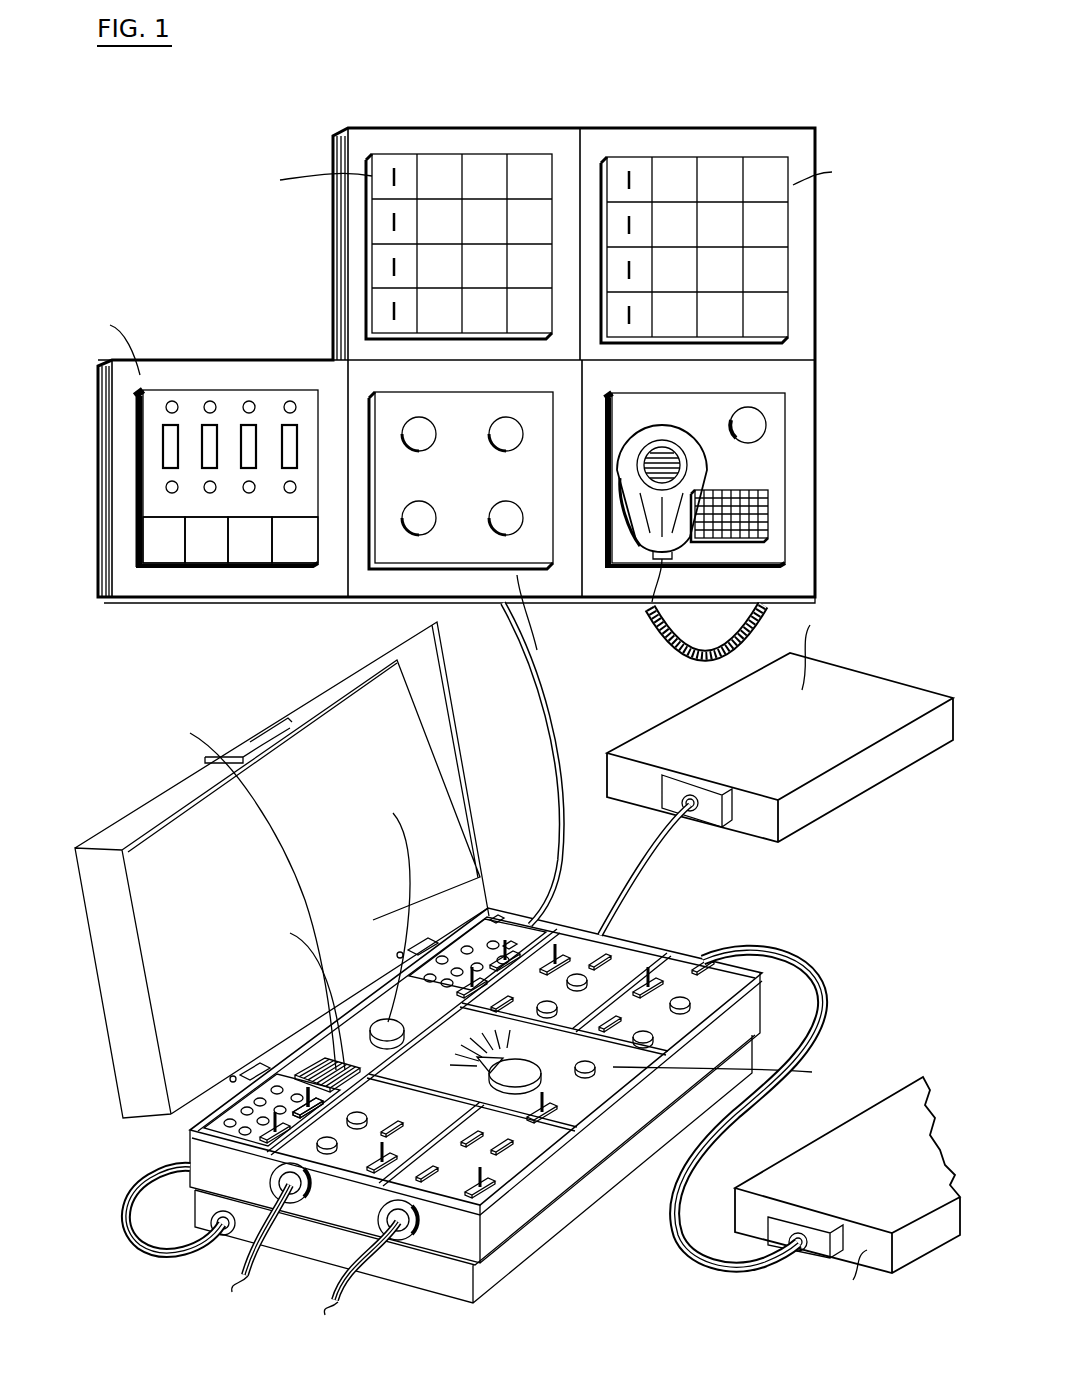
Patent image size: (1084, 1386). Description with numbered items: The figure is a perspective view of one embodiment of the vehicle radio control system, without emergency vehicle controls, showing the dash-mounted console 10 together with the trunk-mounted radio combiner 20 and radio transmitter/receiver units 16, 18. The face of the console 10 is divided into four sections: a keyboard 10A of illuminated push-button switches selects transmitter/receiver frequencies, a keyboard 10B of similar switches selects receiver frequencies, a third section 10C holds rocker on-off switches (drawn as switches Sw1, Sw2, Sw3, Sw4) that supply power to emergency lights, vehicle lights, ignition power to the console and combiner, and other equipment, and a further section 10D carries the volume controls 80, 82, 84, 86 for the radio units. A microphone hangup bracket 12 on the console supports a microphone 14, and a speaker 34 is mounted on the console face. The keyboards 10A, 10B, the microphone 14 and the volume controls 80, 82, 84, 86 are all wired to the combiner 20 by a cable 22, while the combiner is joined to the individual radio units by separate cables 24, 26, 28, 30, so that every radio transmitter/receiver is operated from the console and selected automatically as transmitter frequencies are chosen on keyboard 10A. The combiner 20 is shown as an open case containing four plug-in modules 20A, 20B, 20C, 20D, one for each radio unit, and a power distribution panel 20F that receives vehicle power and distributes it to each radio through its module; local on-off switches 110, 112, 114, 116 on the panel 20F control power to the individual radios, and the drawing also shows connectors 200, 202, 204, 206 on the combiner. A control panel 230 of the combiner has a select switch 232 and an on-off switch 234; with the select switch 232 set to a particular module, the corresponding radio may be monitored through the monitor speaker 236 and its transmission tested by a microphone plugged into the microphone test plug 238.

The console 10 is at (477, 124).
The transmitter frequency select keyboard 10A is at (405, 165).
The receiver frequency select keyboard 10B is at (688, 170).
The third section 10C is at (229, 407).
The volume controls section 10D is at (486, 540).
The microphone hangup bracket 12 is at (795, 420).
The microphone 14 is at (697, 460).
The mobile radio transmitter/receiver unit 16 is at (688, 732).
The mobile radio transmitter/receiver unit 18 is at (823, 1159).
The radio combiner 20 is at (772, 989).
The plug-in module 20A is at (350, 1145).
The plug-in module 20B is at (513, 1150).
The plug-in module 20C is at (615, 965).
The plug-in module 20D is at (707, 987).
The power distribution panel 20F is at (187, 1170).
The cable 22 is at (542, 714).
The cable 24 is at (242, 1258).
The cable 26 is at (345, 1300).
The cable 28 is at (642, 865).
The cable 30 is at (807, 1040).
The speaker 34 is at (747, 517).
The volume control 80 is at (419, 434).
The volume control 82 is at (419, 520).
The volume control 84 is at (506, 434).
The volume control 86 is at (506, 518).
The local on-off switch 110 is at (190, 1127).
The local on-off switch 112 is at (307, 1093).
The local on-off switch 114 is at (497, 927).
The local on-off switch 116 is at (507, 944).
The cable connector 200 is at (293, 1203).
The cable connector 202 is at (505, 1182).
The connector 204 is at (600, 958).
The connector 206 is at (703, 960).
The control panel 230 is at (709, 1130).
The select switch 232 is at (530, 1085).
The on-off switch 234 is at (545, 1112).
The monitor speaker 236 is at (322, 1060).
The microphone test plug 238 is at (387, 1027).
The switch 1 Sw1 is at (153, 540).
The switch 2 Sw2 is at (203, 540).
The switch 3 Sw3 is at (250, 542).
The switch 4 Sw4 is at (297, 542).